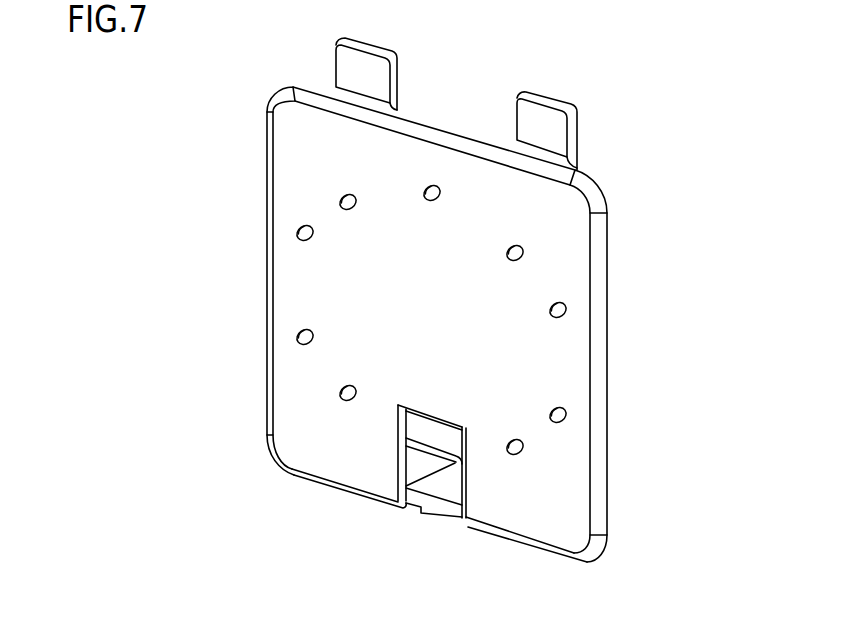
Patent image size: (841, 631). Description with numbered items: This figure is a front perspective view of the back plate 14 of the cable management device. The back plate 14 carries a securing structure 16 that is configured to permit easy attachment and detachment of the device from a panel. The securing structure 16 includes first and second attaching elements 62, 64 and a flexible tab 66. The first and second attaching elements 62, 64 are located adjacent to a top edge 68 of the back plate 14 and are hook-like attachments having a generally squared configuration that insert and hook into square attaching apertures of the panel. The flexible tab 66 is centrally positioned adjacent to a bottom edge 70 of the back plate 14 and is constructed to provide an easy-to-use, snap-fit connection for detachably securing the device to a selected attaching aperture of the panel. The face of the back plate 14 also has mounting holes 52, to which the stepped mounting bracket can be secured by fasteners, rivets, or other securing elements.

The back plate 14 is at (610, 67).
The securing structure 16 is at (543, 72).
The mounting holes 52 is at (433, 185).
The first attaching element 62 is at (338, 43).
The second attaching element 64 is at (578, 117).
The flexible tab 66 is at (447, 511).
The top edge 68 is at (413, 125).
The bottom edge 70 is at (343, 490).